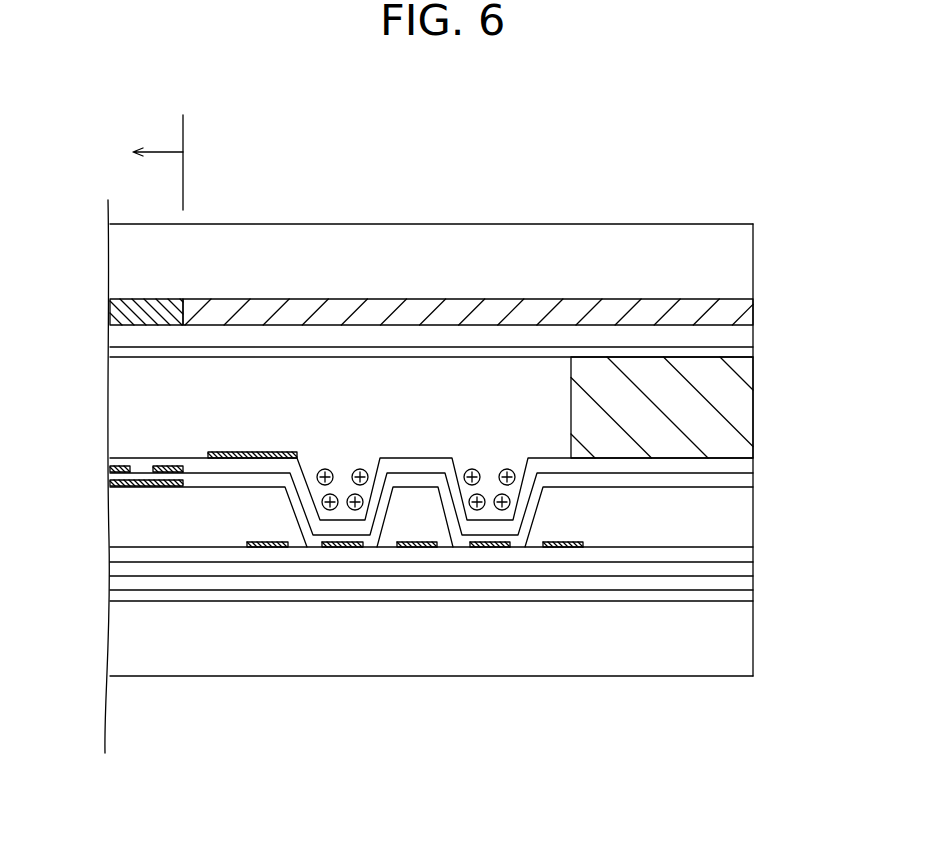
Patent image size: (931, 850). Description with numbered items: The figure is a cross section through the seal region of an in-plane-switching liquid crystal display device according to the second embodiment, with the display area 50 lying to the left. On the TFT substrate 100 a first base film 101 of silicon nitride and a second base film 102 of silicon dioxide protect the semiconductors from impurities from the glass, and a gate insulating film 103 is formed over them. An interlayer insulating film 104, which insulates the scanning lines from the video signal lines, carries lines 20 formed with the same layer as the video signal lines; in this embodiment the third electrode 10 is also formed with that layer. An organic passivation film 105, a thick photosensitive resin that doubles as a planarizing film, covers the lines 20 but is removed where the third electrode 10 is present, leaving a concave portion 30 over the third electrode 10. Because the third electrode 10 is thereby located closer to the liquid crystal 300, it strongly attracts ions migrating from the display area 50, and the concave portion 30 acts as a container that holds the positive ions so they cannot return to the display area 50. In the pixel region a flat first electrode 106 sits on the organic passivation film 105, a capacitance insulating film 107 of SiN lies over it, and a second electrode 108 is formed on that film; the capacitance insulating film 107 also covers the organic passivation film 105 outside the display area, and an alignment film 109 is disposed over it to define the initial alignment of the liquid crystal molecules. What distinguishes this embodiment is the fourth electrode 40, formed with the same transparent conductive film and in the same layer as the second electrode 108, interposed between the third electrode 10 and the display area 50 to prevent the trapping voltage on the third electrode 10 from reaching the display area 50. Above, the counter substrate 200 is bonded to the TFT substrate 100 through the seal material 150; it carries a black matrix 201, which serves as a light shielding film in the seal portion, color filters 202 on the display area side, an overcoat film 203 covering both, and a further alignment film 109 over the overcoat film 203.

The third electrode 10 is at (333, 547).
The lines 20 is at (270, 547).
The concave portion 30 is at (342, 478).
The fourth electrode 40 is at (228, 452).
The display area 50 is at (158, 162).
The TFT substrate 100 is at (740, 654).
The first base film 101 is at (742, 597).
The second base film 102 is at (742, 583).
The gate insulating film 103 is at (742, 570).
The interlayer insulating film 104 is at (742, 557).
The organic passivation film 105 is at (740, 511).
The first electrode 106 is at (132, 483).
The capacitance insulating film 107 is at (742, 483).
The second electrode 108 is at (165, 467).
The alignment film 109 is at (733, 357).
The seal material 150 is at (740, 410).
The counter substrate 200 is at (740, 260).
The black matrix 201 is at (400, 318).
The color filters 202 is at (150, 307).
The overcoat film 203 is at (740, 336).
The liquid crystal 300 is at (257, 404).